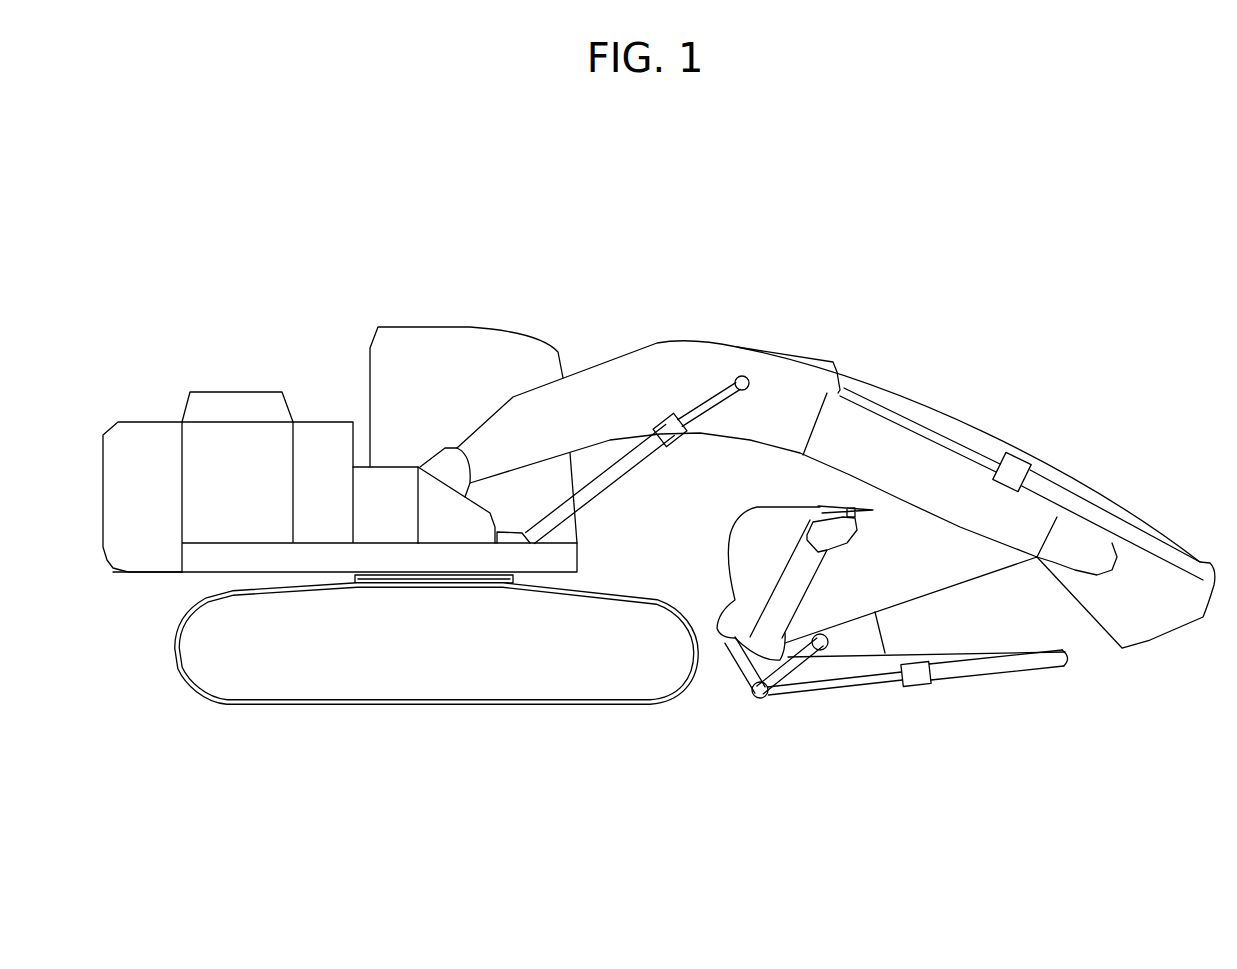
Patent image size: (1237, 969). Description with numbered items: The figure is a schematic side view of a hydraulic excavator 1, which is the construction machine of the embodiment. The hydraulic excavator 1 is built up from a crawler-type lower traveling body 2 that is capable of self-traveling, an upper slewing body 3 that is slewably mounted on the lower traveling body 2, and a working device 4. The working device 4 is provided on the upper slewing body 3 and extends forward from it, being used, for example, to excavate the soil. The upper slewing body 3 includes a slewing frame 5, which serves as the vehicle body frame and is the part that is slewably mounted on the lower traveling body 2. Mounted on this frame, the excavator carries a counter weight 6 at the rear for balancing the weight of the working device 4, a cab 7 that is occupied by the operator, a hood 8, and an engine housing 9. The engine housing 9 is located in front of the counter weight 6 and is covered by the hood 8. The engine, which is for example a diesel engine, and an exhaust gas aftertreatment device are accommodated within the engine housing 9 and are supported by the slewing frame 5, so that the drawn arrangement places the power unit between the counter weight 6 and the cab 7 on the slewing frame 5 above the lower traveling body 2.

The hydraulic excavator 1 is at (648, 308).
The lower traveling body 2 is at (281, 719).
The upper slewing body 3 is at (347, 337).
The working device 4 is at (868, 358).
The slewing frame 5 is at (222, 575).
The counter weight 6 is at (138, 440).
The cab 7 is at (453, 327).
The hood 8 is at (251, 390).
The engine housing 9 is at (215, 500).